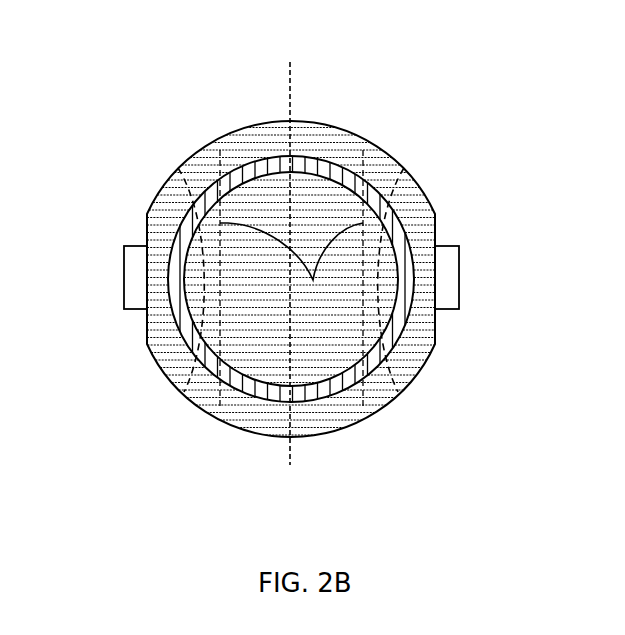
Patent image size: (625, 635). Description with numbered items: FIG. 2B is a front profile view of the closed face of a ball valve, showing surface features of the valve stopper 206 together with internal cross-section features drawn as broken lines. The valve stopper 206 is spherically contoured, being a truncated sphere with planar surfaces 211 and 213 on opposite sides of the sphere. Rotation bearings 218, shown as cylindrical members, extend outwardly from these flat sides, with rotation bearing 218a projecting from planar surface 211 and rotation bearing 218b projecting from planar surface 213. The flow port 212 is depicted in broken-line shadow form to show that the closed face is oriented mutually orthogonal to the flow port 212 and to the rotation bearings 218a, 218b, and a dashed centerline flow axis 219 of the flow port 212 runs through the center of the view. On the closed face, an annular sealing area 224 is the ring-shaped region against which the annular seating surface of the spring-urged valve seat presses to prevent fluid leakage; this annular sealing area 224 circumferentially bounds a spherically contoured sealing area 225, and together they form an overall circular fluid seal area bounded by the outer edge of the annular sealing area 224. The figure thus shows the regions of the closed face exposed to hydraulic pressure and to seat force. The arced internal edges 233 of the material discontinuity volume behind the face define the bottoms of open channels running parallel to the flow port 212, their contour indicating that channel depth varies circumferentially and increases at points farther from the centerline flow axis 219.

The valve stopper 206 is at (295, 270).
The planar surface 211 is at (147, 325).
The flow port 212 is at (291, 264).
The planar surface 213 is at (435, 235).
The rotation bearings 218 is at (295, 266).
The rotation bearing 218a is at (123, 267).
The rotation bearing 218b is at (459, 264).
The centerline flow axis 219 is at (288, 98).
The annular sealing area 224 is at (320, 387).
The spherical sealing area 225 is at (265, 362).
The internal edges 233 is at (147, 230).